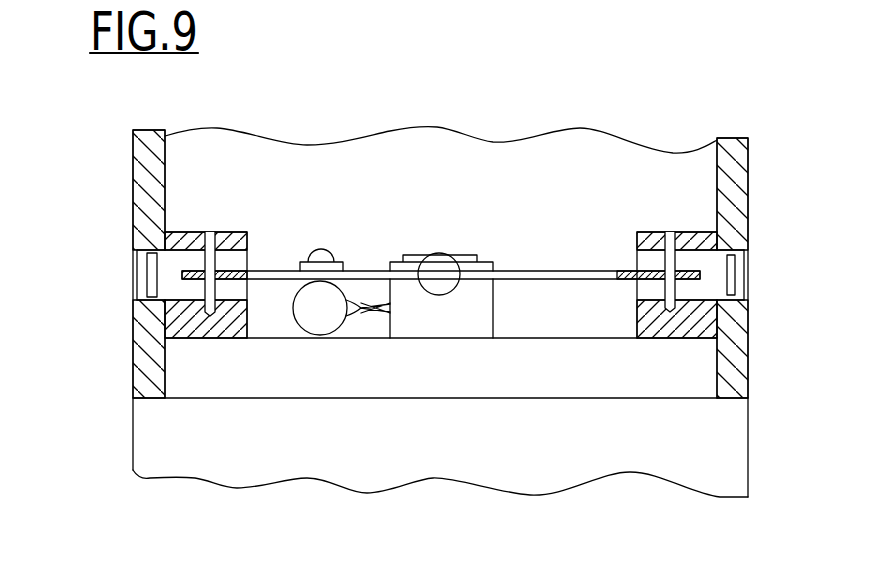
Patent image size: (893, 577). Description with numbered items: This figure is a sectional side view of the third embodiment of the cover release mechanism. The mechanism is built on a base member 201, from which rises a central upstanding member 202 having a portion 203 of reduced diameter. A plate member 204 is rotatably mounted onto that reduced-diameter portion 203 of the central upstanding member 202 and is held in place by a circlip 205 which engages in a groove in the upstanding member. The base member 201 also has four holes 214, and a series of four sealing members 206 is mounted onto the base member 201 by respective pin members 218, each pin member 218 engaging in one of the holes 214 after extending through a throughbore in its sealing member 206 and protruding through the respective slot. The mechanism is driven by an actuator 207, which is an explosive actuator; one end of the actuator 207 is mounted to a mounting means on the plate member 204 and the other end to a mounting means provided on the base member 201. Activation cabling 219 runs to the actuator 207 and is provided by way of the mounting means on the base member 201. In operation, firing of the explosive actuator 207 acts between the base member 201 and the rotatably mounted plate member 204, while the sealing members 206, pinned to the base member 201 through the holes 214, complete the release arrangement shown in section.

The base member 201 is at (713, 470).
The central upstanding member 202 is at (472, 318).
The portion of reduced diameter 203 is at (478, 260).
The plate member 204 is at (578, 270).
The circlip 205 is at (410, 255).
The sealing member 206 is at (140, 277).
The actuator 207 is at (312, 320).
The hole 214 is at (210, 316).
The pin member 218 is at (213, 231).
The activation cabling 219 is at (355, 318).